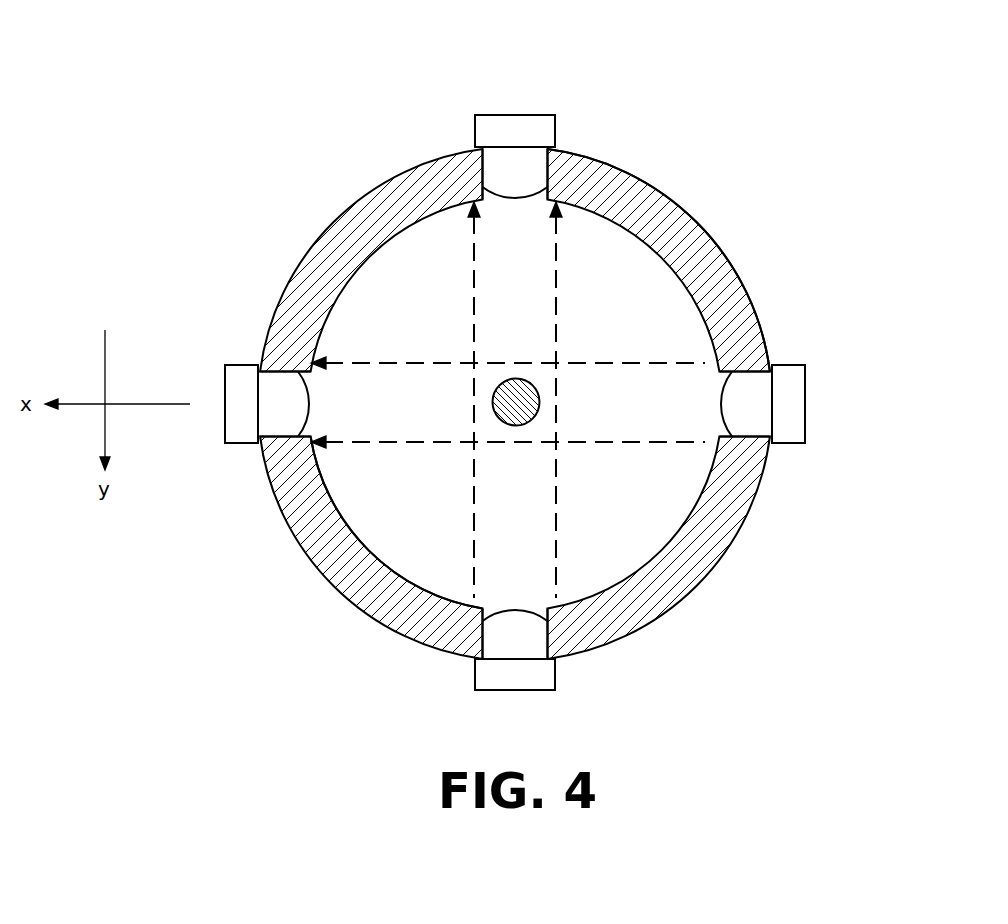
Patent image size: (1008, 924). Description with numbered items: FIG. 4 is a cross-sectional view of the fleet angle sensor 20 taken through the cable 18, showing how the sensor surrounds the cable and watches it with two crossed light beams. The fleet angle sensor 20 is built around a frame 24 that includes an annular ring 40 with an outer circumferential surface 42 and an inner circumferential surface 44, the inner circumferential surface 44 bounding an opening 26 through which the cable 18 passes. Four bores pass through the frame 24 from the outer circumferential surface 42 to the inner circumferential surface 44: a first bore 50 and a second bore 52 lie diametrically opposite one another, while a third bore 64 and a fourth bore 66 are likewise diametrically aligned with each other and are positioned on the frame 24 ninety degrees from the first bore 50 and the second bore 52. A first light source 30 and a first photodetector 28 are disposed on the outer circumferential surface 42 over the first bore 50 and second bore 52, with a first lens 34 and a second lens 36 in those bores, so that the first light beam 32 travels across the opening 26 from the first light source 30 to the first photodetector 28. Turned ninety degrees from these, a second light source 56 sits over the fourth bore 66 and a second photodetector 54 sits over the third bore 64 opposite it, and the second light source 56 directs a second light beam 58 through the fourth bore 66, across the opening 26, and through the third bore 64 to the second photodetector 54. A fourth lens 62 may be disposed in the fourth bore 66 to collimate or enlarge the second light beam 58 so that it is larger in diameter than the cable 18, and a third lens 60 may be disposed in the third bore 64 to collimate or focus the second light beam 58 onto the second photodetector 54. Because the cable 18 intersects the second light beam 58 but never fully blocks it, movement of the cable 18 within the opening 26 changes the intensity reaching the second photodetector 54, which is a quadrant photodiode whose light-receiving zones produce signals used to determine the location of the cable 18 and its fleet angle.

The cable 18 is at (512, 425).
The fleet angle sensor 20 is at (762, 96).
The frame 24 is at (685, 578).
The opening 26 is at (627, 270).
The first photodetector 28 is at (240, 388).
The first light source 30 is at (805, 432).
The first light beam 32 is at (600, 442).
The first lens 34 is at (285, 385).
The second lens 36 is at (743, 388).
The annular ring 40 is at (327, 553).
The outer circumferential surface 42 is at (736, 257).
The inner circumferential surface 44 is at (352, 527).
The first bore 50 is at (277, 432).
The second bore 52 is at (757, 432).
The second photodetector 54 is at (517, 133).
The second light source 56 is at (518, 678).
The second light beam 58 is at (472, 307).
The third lens 60 is at (525, 172).
The fourth lens 62 is at (502, 630).
The third bore 64 is at (486, 166).
The fourth bore 66 is at (542, 626).